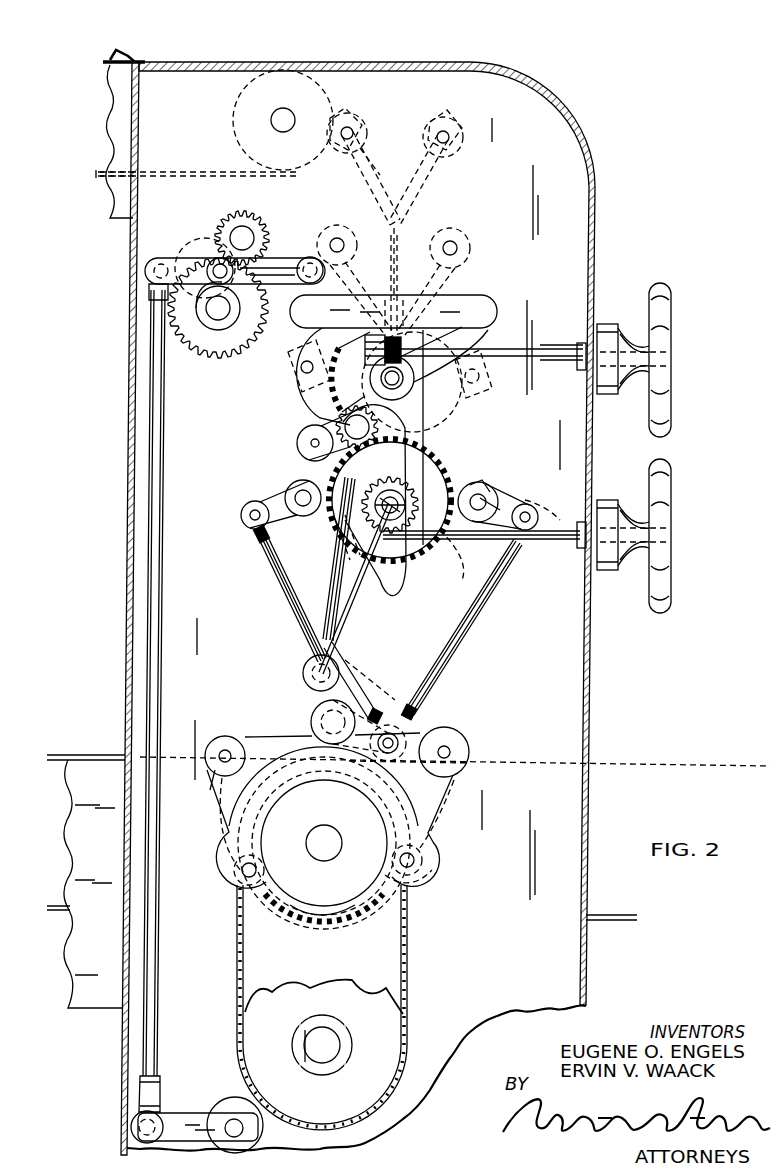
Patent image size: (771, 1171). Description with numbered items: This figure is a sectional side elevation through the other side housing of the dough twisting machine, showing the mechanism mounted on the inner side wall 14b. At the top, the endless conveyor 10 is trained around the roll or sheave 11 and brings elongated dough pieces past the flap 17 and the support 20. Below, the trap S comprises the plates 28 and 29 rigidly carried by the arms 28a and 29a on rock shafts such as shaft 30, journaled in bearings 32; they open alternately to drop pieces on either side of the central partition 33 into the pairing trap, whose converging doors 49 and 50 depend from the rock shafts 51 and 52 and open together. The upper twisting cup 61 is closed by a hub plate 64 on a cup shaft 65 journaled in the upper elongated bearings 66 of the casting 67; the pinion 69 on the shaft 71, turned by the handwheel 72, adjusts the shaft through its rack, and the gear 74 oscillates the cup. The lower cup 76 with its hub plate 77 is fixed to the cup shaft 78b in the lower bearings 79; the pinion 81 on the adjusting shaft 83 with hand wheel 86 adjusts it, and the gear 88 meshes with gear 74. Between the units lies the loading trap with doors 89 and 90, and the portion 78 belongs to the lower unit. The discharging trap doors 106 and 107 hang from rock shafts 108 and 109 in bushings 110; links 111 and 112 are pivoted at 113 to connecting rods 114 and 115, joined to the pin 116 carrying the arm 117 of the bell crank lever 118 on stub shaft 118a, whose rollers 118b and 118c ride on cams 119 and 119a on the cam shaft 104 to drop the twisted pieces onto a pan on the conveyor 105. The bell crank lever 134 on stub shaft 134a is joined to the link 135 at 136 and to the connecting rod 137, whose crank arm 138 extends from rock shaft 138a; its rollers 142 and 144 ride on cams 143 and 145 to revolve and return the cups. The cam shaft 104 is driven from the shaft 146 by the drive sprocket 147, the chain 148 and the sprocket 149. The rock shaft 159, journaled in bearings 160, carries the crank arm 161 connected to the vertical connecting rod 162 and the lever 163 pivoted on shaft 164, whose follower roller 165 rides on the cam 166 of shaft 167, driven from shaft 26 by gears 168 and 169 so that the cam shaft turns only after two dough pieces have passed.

The endless conveyor 10 is at (212, 62).
The roll or sheave 11 is at (245, 72).
The flap 17 is at (124, 52).
The support wall 20 is at (108, 100).
The shaft 26 is at (236, 212).
The trap door or plate 28 is at (418, 183).
The arms 28a is at (462, 125).
The trap door or plate 29 is at (365, 182).
The arms 29a is at (372, 150).
The rock shaft 30 is at (462, 135).
The bearings 32 is at (356, 118).
The central partition 33 is at (400, 235).
The trap door 49 is at (399, 262).
The trap door 50 is at (391, 260).
The rock shaft 51 is at (458, 244).
The rock shaft 52 is at (345, 240).
The twisting cup 61 is at (462, 398).
The hub plate 64 is at (338, 423).
The cup shaft 65 is at (410, 365).
The upper elongated bearings 66 is at (440, 351).
The casting 67 is at (460, 310).
The pinion 69 is at (400, 340).
The shaft 71 is at (560, 345).
The handwheel 72 is at (672, 332).
The gear 74 is at (340, 350).
The double cup member 76 is at (450, 470).
The hub plate 77 is at (462, 485).
The gear 78 is at (335, 550).
The cup shaft 78b is at (348, 530).
The lower elongated bearings 79 is at (335, 560).
The pinion 81 is at (372, 560).
The adjusting shaft 83 is at (548, 540).
The hand wheel 86 is at (661, 536).
The gear 88 is at (430, 455).
The trap door 89 is at (480, 378).
The trap door 90 is at (300, 375).
The cam shaft 104 is at (326, 835).
The endless belt conveyor 105 is at (47, 755).
The trap door 106 is at (465, 548).
The trap door 107 is at (320, 536).
The rock shaft 108 is at (500, 500).
The rock shaft 109 is at (290, 490).
The bushings 110 is at (496, 490).
The link 111 is at (535, 510).
The link 112 is at (252, 500).
The pivotal connection 113 is at (570, 522).
The connecting rod 114 is at (480, 600).
The connecting rod 115 is at (290, 600).
The pin 116 is at (415, 725).
The arm 117 is at (388, 733).
The bell crank lever 118 is at (250, 740).
The stub shaft 118a is at (215, 765).
The follower roller 118b is at (372, 712).
The roller 118c is at (235, 880).
The cam 119 is at (450, 795).
The cam 119a is at (290, 915).
The bell crank lever 134 is at (440, 820).
The stub shaft 134a is at (460, 745).
The link 135 is at (350, 680).
The connection 136 is at (360, 690).
The connecting rod 137 is at (315, 660).
The crank arm 138 is at (256, 540).
The rock shaft 138a is at (300, 443).
The follower roller 142 is at (315, 715).
The cam 143 is at (440, 838).
The follower roller 144 is at (420, 860).
The cam 145 is at (430, 870).
The shaft 146 is at (325, 1045).
The drive sprocket 147 is at (334, 1102).
The chain 148 is at (410, 1005).
The sprocket 149 is at (352, 915).
The rock shaft 159 is at (234, 1120).
The bearings 160 is at (215, 1135).
The crank arm 161 is at (150, 1120).
The vertical connecting rod 162 is at (158, 1012).
The lever 163 is at (185, 258).
The shaft 164 is at (300, 257).
The follower roller 165 is at (205, 240).
The cam 166 is at (222, 320).
The shaft 167 is at (210, 330).
The gear 168 is at (248, 213).
The gear 169 is at (148, 345).
The inner side wall 14b is at (530, 655).